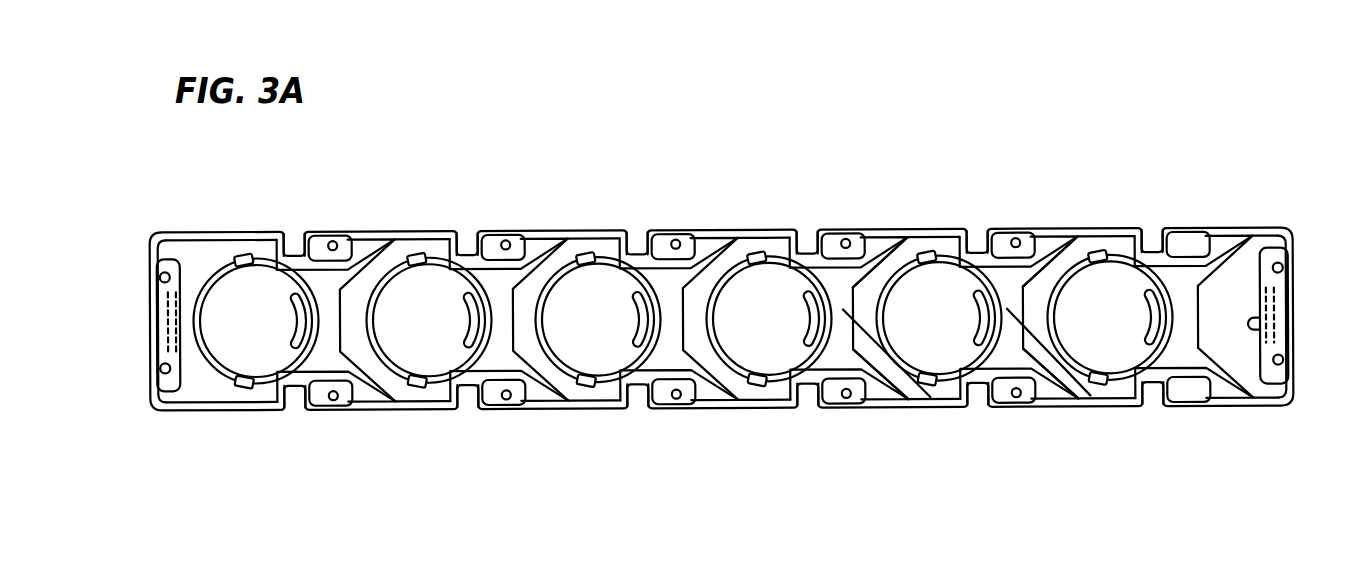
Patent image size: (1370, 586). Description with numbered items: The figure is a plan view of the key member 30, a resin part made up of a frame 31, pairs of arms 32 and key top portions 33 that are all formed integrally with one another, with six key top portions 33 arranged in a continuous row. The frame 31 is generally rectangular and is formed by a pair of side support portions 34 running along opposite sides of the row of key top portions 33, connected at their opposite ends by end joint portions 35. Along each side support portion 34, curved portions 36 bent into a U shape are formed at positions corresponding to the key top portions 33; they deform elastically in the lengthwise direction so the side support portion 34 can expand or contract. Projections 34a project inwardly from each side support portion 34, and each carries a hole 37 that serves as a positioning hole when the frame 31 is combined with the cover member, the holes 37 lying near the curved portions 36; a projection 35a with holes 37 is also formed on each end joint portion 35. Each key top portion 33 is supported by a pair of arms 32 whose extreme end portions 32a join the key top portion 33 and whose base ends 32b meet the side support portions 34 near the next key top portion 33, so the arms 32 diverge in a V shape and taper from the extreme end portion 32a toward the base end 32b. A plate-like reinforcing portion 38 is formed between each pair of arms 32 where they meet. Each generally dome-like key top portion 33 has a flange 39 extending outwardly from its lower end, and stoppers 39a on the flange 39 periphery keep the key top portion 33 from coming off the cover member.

The key member 30 is at (1187, 228).
The frame 31 is at (1205, 390).
The arms 32 is at (1226, 395).
The extreme end portion 32a is at (1020, 380).
The base end 32b is at (1075, 395).
The key top portion 33 is at (1120, 275).
The side support portion 34 is at (400, 404).
The projection 34a is at (538, 374).
The end joint portion 35 is at (1289, 310).
The projection 35a is at (1256, 326).
The curved portion 36 is at (640, 410).
The hole 37 is at (160, 366).
The reinforcing portion 38 is at (1062, 350).
The flange 39 is at (208, 380).
The stopper 39a is at (237, 388).